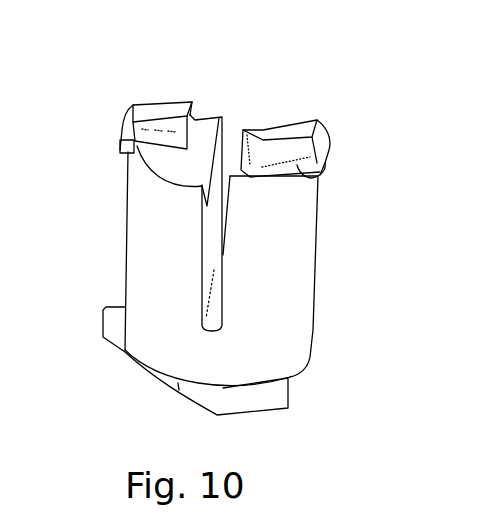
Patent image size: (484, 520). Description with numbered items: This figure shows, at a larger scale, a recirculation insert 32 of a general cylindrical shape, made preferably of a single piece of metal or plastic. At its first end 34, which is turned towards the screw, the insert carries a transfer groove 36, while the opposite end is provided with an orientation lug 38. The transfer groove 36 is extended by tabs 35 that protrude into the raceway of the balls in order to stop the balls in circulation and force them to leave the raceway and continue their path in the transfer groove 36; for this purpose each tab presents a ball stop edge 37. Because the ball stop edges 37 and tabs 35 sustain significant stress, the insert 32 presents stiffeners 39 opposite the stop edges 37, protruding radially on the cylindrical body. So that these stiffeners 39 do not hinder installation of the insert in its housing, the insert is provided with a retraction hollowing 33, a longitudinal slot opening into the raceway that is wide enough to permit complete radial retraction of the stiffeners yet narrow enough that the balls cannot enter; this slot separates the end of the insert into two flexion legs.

The recirculation insert 32 is at (317, 283).
The retraction hollowing 33 is at (210, 252).
The first end 34 is at (238, 94).
The tabs 35 is at (145, 105).
The transfer groove 36 is at (197, 174).
The ball stop edge 37 is at (257, 128).
The orientation lug 38 is at (257, 397).
The stiffeners 39 is at (120, 147).